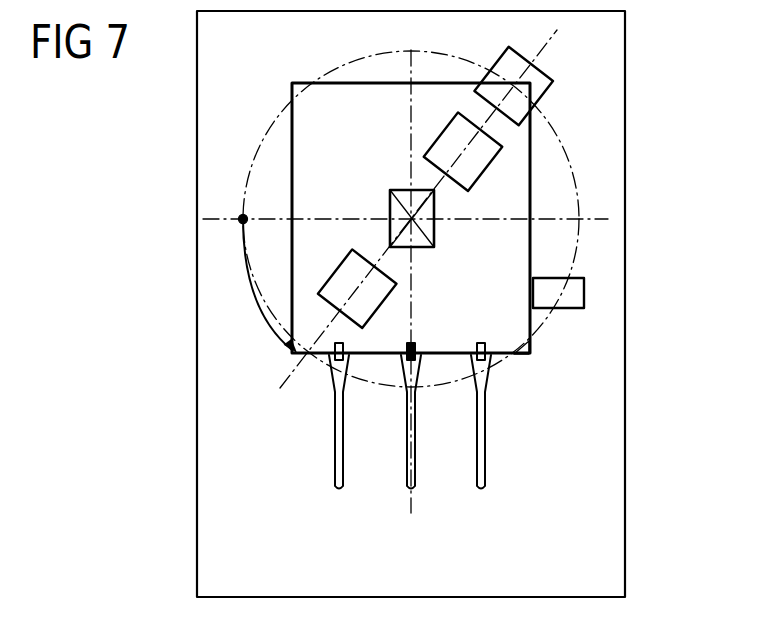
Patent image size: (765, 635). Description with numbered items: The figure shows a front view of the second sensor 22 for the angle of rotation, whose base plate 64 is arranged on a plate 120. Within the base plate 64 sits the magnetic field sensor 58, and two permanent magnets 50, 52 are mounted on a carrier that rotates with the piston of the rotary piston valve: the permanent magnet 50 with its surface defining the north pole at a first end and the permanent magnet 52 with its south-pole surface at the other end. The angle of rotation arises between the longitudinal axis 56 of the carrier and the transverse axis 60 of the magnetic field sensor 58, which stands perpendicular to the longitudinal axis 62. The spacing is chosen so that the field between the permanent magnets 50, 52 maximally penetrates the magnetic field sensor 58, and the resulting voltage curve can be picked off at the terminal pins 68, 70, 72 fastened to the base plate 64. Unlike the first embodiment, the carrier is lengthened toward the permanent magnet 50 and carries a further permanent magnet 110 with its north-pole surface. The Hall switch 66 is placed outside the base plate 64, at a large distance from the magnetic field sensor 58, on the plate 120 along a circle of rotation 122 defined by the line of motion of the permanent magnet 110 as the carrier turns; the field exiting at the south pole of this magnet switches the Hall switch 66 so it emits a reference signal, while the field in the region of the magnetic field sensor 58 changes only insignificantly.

The sensor for the angle of rotation 22 is at (157, 152).
The permanent magnet 50 is at (478, 185).
The permanent magnet 52 is at (405, 296).
The longitudinal axis of the carrier 56 is at (563, 20).
The magnetic field sensor 58 is at (400, 190).
The transverse axis 60 is at (268, 212).
The longitudinal axis 62 is at (412, 63).
The base plate 64 is at (343, 97).
The Hall switch 66 is at (586, 292).
The terminal pin 68 is at (343, 460).
The terminal pin 70 is at (415, 460).
The terminal pin 72 is at (486, 460).
The further permanent magnet 110 is at (533, 100).
The plate 120 is at (600, 508).
The circle of rotation 122 is at (577, 190).